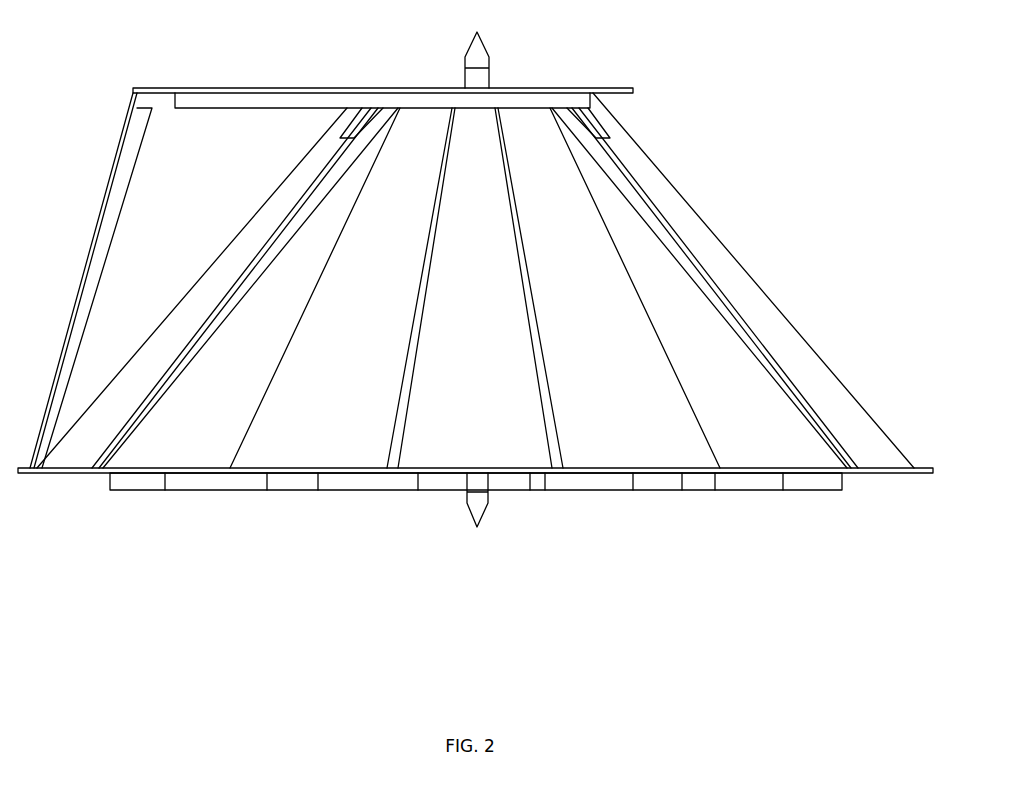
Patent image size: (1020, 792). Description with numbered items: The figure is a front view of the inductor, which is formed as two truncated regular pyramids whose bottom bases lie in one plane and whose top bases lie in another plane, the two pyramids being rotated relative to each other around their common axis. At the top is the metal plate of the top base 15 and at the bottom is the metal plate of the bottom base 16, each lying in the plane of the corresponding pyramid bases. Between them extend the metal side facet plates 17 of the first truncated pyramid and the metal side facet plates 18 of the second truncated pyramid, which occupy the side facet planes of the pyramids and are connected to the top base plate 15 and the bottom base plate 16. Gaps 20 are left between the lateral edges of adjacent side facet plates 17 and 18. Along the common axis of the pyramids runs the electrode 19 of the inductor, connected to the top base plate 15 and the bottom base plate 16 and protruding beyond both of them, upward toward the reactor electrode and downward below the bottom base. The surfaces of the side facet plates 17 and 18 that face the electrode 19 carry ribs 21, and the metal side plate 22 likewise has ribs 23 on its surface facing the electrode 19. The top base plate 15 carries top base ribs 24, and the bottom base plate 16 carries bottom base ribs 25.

The metal plate of top base 15 is at (618, 86).
The metal plate of bottom base 16 is at (890, 475).
The metal side facet plates of first truncated pyramid 17 is at (267, 323).
The metal side facet plates of second truncated pyramid 18 is at (545, 205).
The electrode of inductor 19 is at (481, 504).
The gaps between side facet plates 20 is at (256, 263).
The ribs of side facet plates 21 is at (346, 143).
The side plate 22 is at (114, 136).
The ribs of side plate 23 is at (109, 212).
The ribs of metal plate of top base 24 is at (250, 96).
The ribs of metal plate of bottom base 25 is at (649, 479).